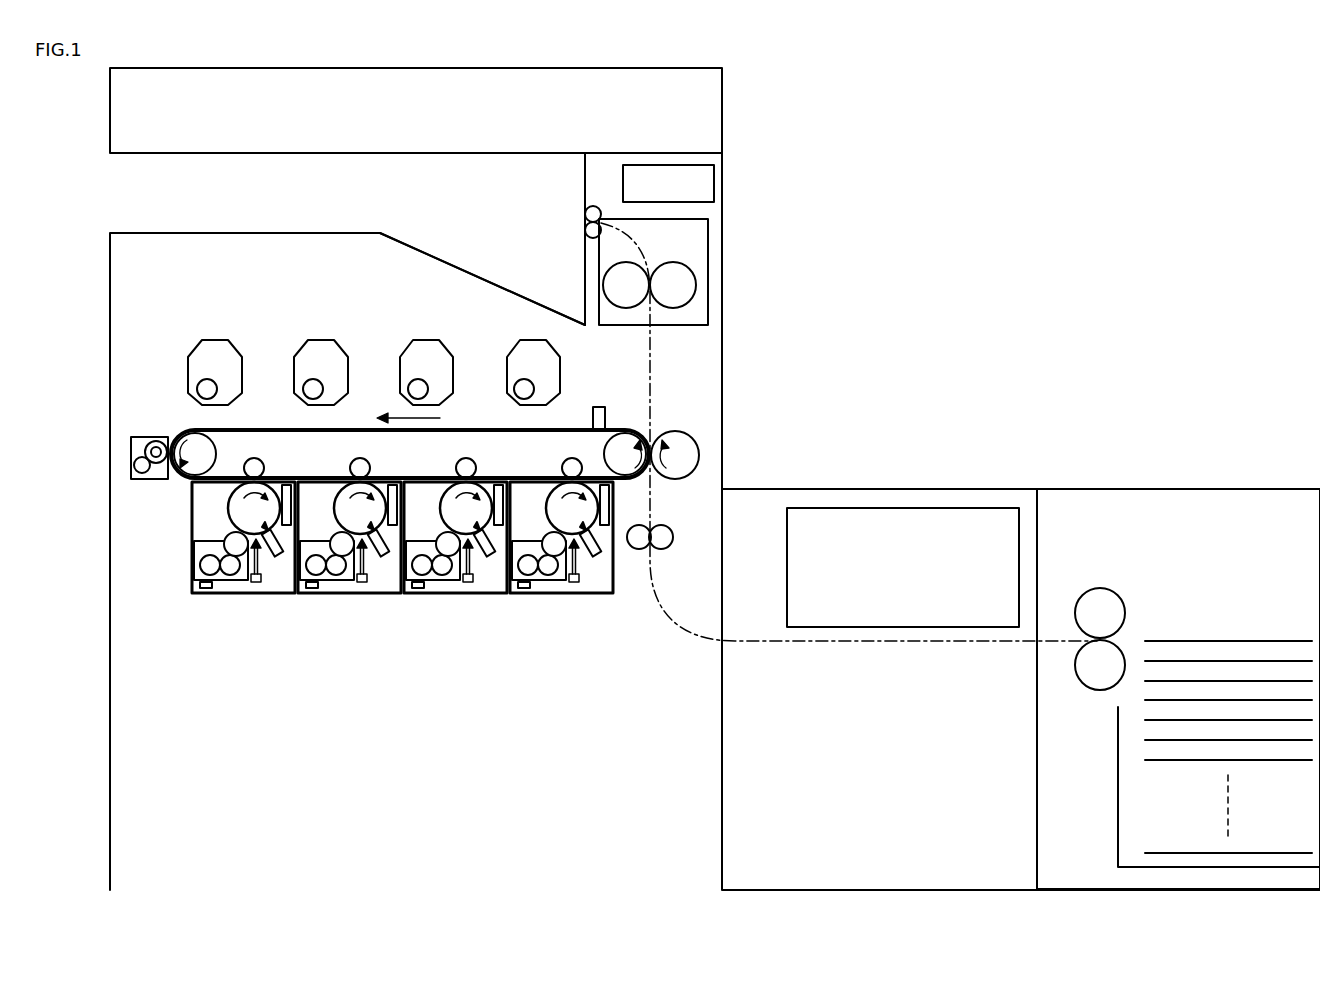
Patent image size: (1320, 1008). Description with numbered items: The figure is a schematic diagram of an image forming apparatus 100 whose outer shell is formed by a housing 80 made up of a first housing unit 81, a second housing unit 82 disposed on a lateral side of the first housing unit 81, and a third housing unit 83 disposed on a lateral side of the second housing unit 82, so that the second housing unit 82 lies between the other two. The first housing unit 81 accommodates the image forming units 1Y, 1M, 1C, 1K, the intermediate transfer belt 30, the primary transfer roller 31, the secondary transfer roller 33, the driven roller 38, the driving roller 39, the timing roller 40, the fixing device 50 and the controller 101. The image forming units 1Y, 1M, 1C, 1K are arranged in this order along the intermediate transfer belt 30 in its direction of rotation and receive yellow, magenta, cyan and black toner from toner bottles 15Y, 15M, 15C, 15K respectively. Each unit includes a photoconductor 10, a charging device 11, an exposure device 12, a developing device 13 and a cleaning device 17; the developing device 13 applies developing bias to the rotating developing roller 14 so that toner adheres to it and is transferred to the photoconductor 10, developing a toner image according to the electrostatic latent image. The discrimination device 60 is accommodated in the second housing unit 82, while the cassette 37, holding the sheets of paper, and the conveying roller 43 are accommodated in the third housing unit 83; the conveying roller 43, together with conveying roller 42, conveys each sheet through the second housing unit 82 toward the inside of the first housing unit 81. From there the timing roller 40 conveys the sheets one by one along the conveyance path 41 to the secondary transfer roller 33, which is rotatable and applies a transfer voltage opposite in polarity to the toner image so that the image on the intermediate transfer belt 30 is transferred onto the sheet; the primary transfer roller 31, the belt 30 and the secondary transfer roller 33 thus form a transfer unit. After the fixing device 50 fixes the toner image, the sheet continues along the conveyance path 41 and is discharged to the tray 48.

The image forming apparatus 100 is at (1287, 90).
The controller 101 is at (714, 184).
The fixing device 50 is at (708, 243).
The tray 48 is at (478, 272).
The housing 80 is at (796, 393).
The first housing unit 81 is at (722, 418).
The second housing unit 82 is at (852, 489).
The third housing unit 83 is at (1197, 489).
The discrimination device 60 is at (940, 508).
The conveyance path 41 is at (652, 506).
The timing roller 40 is at (673, 537).
The conveying roller 42 is at (1088, 589).
The conveying roller 43 is at (1090, 690).
The cassette 37 is at (1118, 803).
The intermediate transfer belt 30 is at (262, 428).
The primary transfer roller 31 is at (249, 461).
The secondary transfer roller 33 is at (676, 438).
The driven roller 38 is at (190, 440).
The driving roller 39 is at (622, 436).
The cleaning device 17 is at (287, 485).
The photoconductor 10 is at (236, 502).
The charging device 11 is at (279, 558).
The exposure device 12 is at (257, 589).
The developing device 13 is at (209, 541).
The developing roller 14 is at (239, 556).
The toner bottle 15Y is at (213, 340).
The toner bottle 15M is at (320, 340).
The toner bottle 15C is at (425, 340).
The toner bottle 15K is at (515, 343).
The image forming unit 1Y is at (196, 597).
The image forming unit 1M is at (318, 597).
The image forming unit 1C is at (424, 597).
The image forming unit 1K is at (530, 597).